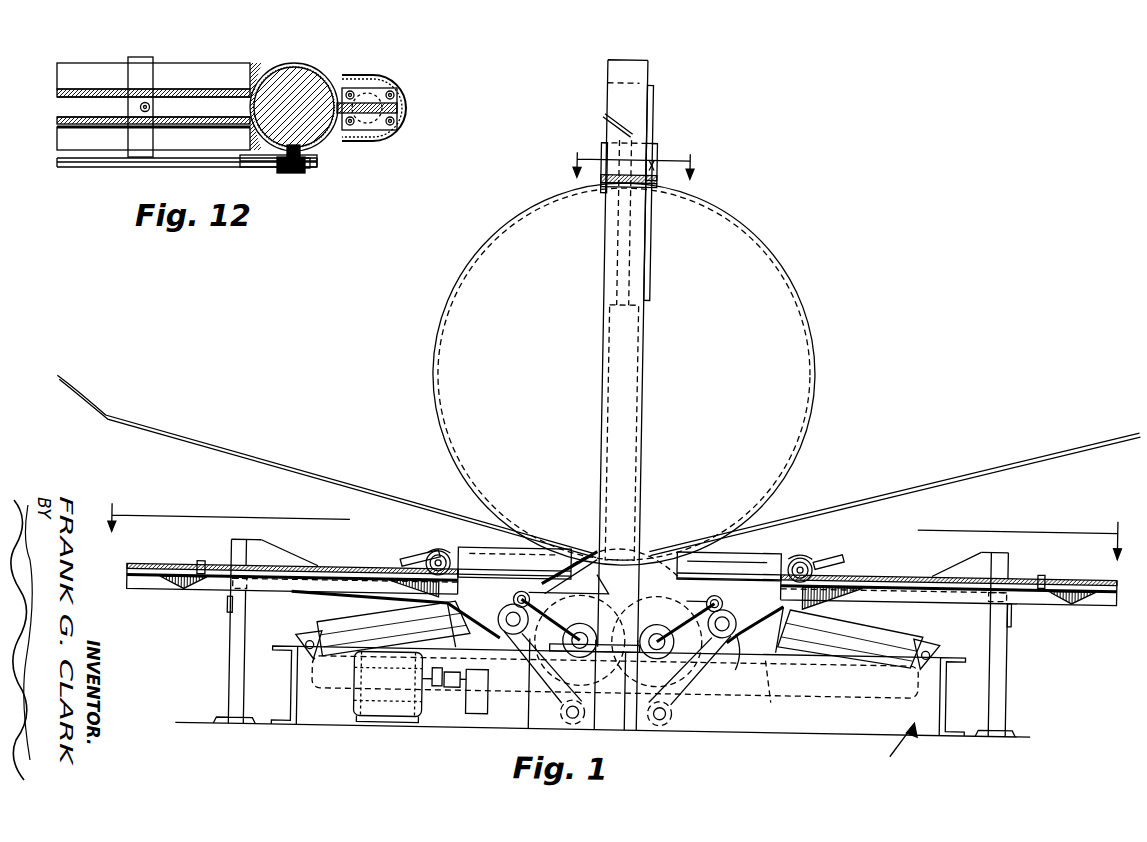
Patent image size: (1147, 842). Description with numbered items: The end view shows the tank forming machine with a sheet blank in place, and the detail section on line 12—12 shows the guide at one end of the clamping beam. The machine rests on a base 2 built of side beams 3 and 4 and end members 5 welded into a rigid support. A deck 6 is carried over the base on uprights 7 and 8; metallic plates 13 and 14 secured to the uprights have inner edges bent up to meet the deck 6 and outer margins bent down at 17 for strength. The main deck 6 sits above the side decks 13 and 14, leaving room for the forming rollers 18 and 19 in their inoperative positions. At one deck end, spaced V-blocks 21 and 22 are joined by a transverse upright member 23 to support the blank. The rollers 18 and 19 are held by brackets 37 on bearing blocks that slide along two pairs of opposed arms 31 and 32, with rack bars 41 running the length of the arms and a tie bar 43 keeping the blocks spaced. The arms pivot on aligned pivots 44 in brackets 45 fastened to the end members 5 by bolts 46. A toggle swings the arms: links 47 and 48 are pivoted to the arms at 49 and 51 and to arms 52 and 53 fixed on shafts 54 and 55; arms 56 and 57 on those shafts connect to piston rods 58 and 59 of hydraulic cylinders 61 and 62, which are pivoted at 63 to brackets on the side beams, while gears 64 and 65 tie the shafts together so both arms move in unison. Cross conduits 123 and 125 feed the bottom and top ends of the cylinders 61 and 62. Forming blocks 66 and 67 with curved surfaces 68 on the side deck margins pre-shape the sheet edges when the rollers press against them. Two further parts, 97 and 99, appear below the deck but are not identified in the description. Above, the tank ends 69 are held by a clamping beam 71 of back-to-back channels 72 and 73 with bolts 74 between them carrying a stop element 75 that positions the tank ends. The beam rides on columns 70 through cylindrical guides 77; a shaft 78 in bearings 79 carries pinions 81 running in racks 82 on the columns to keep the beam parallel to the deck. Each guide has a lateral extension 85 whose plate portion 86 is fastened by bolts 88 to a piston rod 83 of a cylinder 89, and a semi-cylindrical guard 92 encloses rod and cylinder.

In FIG. 1, the base 2 is at (611, 635).
In FIG. 1, the side beam 3 is at (290, 730).
In FIG. 1, the side beam 4 is at (952, 730).
In FIG. 1, the end member 5 is at (757, 732).
In FIG. 1, the deck 6 is at (757, 556).
In FIG. 1, the upright 7 is at (446, 608).
In FIG. 1, the upright 8 is at (234, 658).
In FIG. 1, the section line 12— 12 is at (634, 157).
In FIG. 1, the metallic plate 13 is at (272, 590).
In FIG. 1, the metallic plate 14 is at (933, 592).
In FIG. 1, the downwardly bent outer marginal edge 17 is at (230, 610).
In FIG. 1, the forming roller 18 is at (436, 552).
In FIG. 1, the forming roller 19 is at (808, 554).
In FIG. 1, the V-block 21 is at (566, 548).
In FIG. 1, the V-block 22 is at (696, 553).
In FIG. 1, the transversely disposed upright member 23 is at (530, 550).
In FIG. 1, the operating arm 31 is at (146, 598).
In FIG. 1, the operating arm 32 is at (1110, 598).
In FIG. 1, the bracket 37 is at (445, 554).
In FIG. 1, the rack bar 41 is at (150, 572).
In FIG. 1, the tie bar 43 is at (403, 563).
In FIG. 1, the pivot 44 is at (642, 545).
In FIG. 1, the bracket 45 is at (578, 594).
In FIG. 1, the bolt 46 is at (556, 690).
In FIG. 1, the link 47 is at (533, 700).
In FIG. 1, the link 48 is at (726, 636).
In FIG. 1, the pivot 49 is at (515, 636).
In FIG. 1, the pivot 51 is at (744, 655).
In FIG. 1, the arm 52 is at (584, 724).
In FIG. 1, the arm 53 is at (665, 725).
In FIG. 1, the shaft 54 is at (584, 632).
In FIG. 1, the shaft 55 is at (660, 632).
In FIG. 1, the arm 56 is at (519, 599).
In FIG. 1, the arm 57 is at (695, 603).
In FIG. 1, the piston rod 58 is at (492, 556).
In FIG. 1, the piston rod 59 is at (726, 598).
In FIG. 1, the hydraulic cylinder 61 is at (357, 620).
In FIG. 1, the hydraulic cylinder 62 is at (890, 622).
In FIG. 1, the pivot 63 is at (310, 645).
In FIG. 1, the gear 64 is at (602, 690).
In FIG. 1, the gear 65 is at (630, 720).
In FIG. 1, the forming block 66 is at (242, 548).
In FIG. 1, the forming block 67 is at (1005, 548).
In FIG. 1, the curved surface 68 is at (285, 557).
In FIG. 1, the tank end 69 is at (815, 340).
In FIG. 12, the upright column 70 is at (316, 84).
In FIG. 1, the upright column 70 is at (636, 82).
In FIG. 12, the clamping beam 71 is at (85, 60).
In FIG. 12, the channel 72 is at (178, 63).
In FIG. 12, the channel 73 is at (87, 152).
In FIG. 12, the bolt 74 is at (150, 107).
In FIG. 1, the bolt 74 is at (648, 188).
In FIG. 12, the stop element 75 is at (133, 57).
In FIG. 1, the stop element 75 is at (600, 193).
In FIG. 12, the cylindrical guide 77 is at (303, 66).
In FIG. 1, the cylindrical guide 77 is at (598, 140).
In FIG. 12, the shaft 78 is at (125, 168).
In FIG. 1, the shaft 78 is at (652, 148).
In FIG. 12, the bearing 79 is at (306, 170).
In FIG. 1, the bearing 79 is at (647, 140).
In FIG. 12, the pinion 81 is at (290, 175).
In FIG. 1, the pinion 81 is at (654, 178).
In FIG. 1, the rack 82 is at (648, 272).
In FIG. 1, the piston rod 83 is at (616, 266).
In FIG. 12, the lateral extension 85 is at (406, 104).
In FIG. 12, the plate portion 86 is at (386, 133).
In FIG. 12, the bolt 88 is at (388, 82).
In FIG. 12, the cylinder 89 is at (362, 136).
In FIG. 1, the cylinder 89 is at (608, 354).
In FIG. 1, the semi-cylindrical guard 92 is at (629, 61).
In FIG. 1, the gear reducer 97 is at (478, 718).
In FIG. 1, the motor 99 is at (393, 726).
In FIG. 1, the cross conduit 123 is at (840, 696).
In FIG. 1, the cross conduit 125 is at (770, 672).